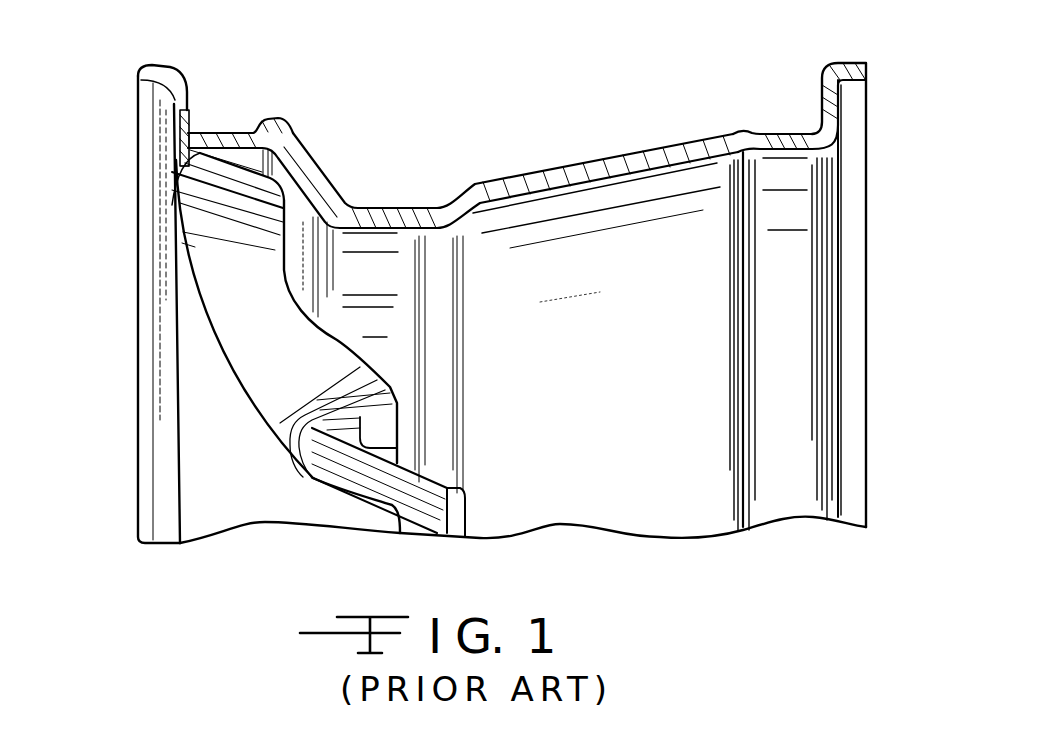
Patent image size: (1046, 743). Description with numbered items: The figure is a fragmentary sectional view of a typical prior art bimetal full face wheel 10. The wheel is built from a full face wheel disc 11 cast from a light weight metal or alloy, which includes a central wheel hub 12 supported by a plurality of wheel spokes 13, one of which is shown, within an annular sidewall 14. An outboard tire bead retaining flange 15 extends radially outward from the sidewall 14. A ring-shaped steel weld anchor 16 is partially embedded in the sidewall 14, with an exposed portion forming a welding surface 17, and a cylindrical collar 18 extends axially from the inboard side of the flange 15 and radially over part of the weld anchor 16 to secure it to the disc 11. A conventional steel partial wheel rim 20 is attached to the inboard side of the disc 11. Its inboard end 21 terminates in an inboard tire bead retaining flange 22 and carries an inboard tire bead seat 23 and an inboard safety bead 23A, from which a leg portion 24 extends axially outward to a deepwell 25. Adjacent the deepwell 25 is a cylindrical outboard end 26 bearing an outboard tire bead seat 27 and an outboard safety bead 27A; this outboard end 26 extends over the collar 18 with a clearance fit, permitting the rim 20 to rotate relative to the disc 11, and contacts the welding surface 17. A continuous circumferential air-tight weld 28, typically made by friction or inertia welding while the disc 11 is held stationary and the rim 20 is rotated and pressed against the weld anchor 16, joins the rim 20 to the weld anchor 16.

The bimetal full face wheel 10 is at (443, 132).
The full face wheel disc 11 is at (118, 474).
The central wheel hub 12 is at (427, 500).
The wheel spoke 13 is at (313, 353).
The annular sidewall 14 is at (237, 190).
The outboard tire bead retaining flange 15 is at (184, 108).
The weld anchor 16 is at (186, 138).
The welding surface 17 is at (192, 130).
The collar 18 is at (197, 173).
The partial wheel rim 20 is at (527, 183).
The inboard end 21 is at (806, 411).
The inboard tire bead retaining flange 22 is at (820, 72).
The inboard tire bead seat 23 is at (773, 133).
The inboard safety bead 23A is at (742, 133).
The leg portion 24 is at (593, 170).
The deepwell 25 is at (378, 214).
The outboard end 26 is at (266, 119).
The outboard tire bead seat 27 is at (262, 130).
The outboard safety bead 27A is at (300, 135).
The weld 28 is at (192, 138).